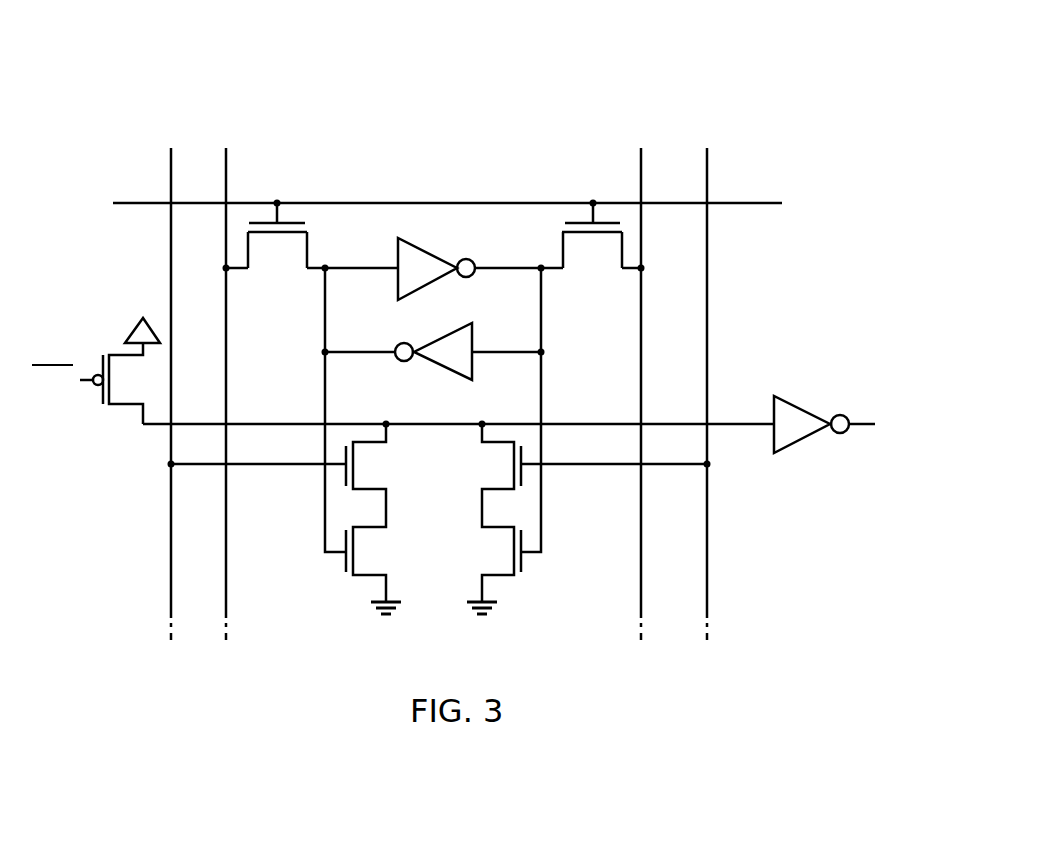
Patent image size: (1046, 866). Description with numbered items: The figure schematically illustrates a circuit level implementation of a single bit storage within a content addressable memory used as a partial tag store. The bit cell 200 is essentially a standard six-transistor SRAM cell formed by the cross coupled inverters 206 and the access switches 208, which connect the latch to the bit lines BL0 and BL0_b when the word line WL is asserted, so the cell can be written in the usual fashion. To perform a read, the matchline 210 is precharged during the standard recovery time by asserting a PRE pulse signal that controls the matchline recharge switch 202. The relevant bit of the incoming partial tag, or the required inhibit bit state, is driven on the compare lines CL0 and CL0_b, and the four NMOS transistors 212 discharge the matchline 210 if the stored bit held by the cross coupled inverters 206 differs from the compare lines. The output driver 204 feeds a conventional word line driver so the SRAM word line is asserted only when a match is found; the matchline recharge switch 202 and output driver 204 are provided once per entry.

The bit cell 200 is at (749, 77).
The matchline recharge switch 202 is at (110, 344).
The output driver 204 is at (833, 345).
The cross coupled inverters 206 is at (451, 282).
The access switches 208 is at (277, 252).
The matchline 210 is at (258, 423).
The NMOS transistors 212 is at (482, 460).